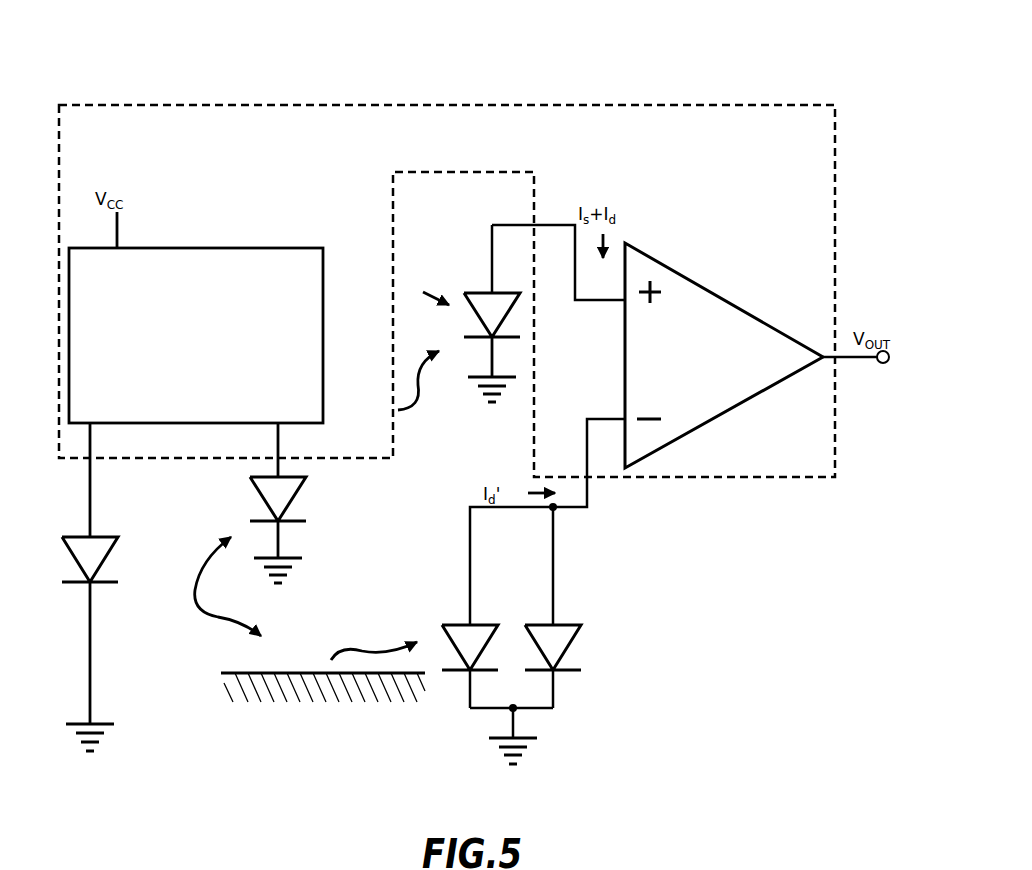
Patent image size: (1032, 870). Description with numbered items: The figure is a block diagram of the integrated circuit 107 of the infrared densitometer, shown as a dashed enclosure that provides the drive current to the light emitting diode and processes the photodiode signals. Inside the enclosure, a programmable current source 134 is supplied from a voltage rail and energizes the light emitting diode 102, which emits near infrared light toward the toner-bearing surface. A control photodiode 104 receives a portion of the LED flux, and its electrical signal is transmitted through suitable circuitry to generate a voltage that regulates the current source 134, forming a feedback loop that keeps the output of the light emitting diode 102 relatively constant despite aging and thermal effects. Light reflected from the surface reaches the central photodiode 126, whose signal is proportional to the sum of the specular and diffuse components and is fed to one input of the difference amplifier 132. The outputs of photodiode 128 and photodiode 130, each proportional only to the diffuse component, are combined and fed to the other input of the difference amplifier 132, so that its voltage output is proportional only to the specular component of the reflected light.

The integrated circuit chip 107 is at (658, 88).
The current source 134 is at (302, 260).
The light emitting diode 102 is at (102, 545).
The control photodiode 104 is at (290, 493).
The central photodiode 126 is at (483, 303).
The photodiode 128 is at (460, 632).
The photodiode 130 is at (582, 630).
The difference amplifier 132 is at (703, 300).